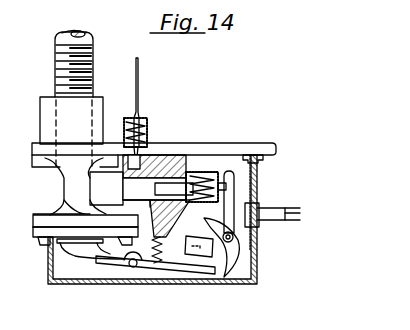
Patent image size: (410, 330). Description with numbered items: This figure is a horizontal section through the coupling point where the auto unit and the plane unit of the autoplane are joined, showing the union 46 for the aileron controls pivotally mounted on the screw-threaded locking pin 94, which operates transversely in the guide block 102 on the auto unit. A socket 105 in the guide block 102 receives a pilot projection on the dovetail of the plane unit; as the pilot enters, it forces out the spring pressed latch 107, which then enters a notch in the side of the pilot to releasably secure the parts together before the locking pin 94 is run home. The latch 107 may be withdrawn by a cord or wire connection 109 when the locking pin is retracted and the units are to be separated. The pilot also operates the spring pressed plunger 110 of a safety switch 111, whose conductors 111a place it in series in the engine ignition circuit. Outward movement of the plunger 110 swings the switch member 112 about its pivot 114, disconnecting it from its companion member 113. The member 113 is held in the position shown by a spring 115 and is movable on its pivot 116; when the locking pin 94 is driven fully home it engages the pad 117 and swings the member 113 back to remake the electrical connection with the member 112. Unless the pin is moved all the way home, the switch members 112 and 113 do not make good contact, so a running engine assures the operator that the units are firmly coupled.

The locking pin 94 is at (108, 36).
The guide block 102 is at (222, 147).
The union 46 is at (45, 214).
The cord or wire connection 109 is at (139, 63).
The spring pressed latch 107 is at (152, 148).
The spring pressed plunger 110 is at (197, 144).
The socket 105 is at (165, 185).
The switch member 112 is at (232, 198).
The pivot 114 is at (254, 270).
The conductors 111a is at (290, 223).
The safety switch 111 is at (219, 252).
The switch member 113 is at (184, 268).
The pivot 116 is at (133, 268).
The pad 117 is at (60, 245).
The spring 115 is at (151, 247).